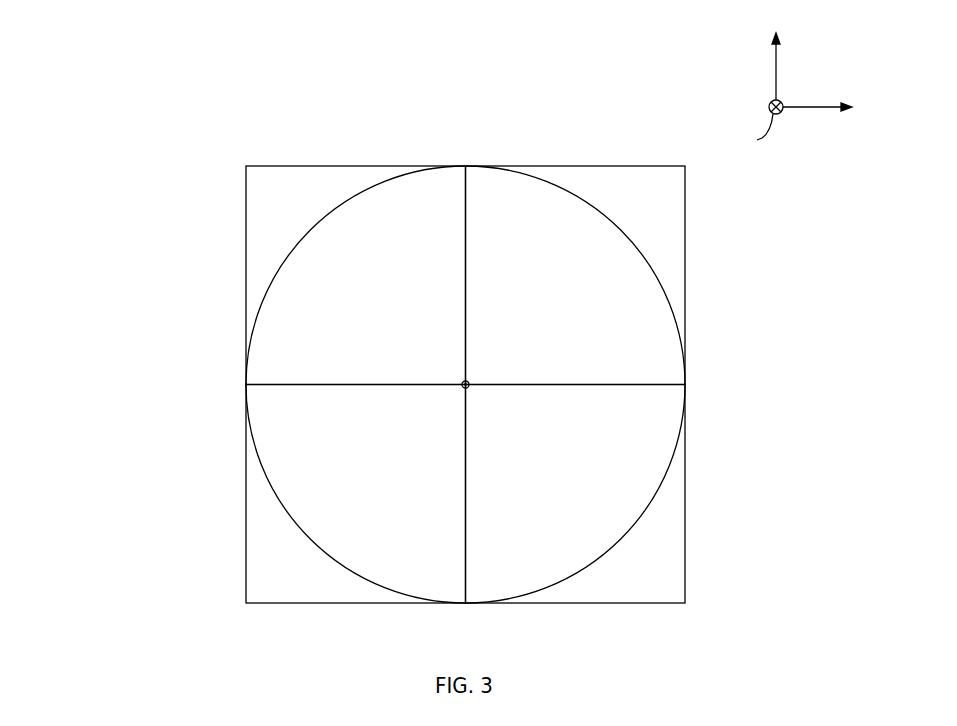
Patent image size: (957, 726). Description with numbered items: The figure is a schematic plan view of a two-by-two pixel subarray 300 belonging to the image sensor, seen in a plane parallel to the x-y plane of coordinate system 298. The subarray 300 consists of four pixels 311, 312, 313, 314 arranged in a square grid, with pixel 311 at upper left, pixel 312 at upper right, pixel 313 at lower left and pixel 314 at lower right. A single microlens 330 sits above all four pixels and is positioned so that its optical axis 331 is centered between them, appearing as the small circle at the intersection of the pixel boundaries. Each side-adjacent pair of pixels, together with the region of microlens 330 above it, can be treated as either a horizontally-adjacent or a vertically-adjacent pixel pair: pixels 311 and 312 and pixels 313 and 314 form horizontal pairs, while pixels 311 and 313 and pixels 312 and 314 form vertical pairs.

The pixel subarray 300 is at (356, 353).
The pixel 311 is at (304, 166).
The pixel 312 is at (607, 166).
The pixel 313 is at (300, 603).
The pixel 314 is at (613, 603).
The microlens 330 is at (550, 585).
The optical axis 331 is at (468, 388).
The coordinate system 298 is at (815, 130).